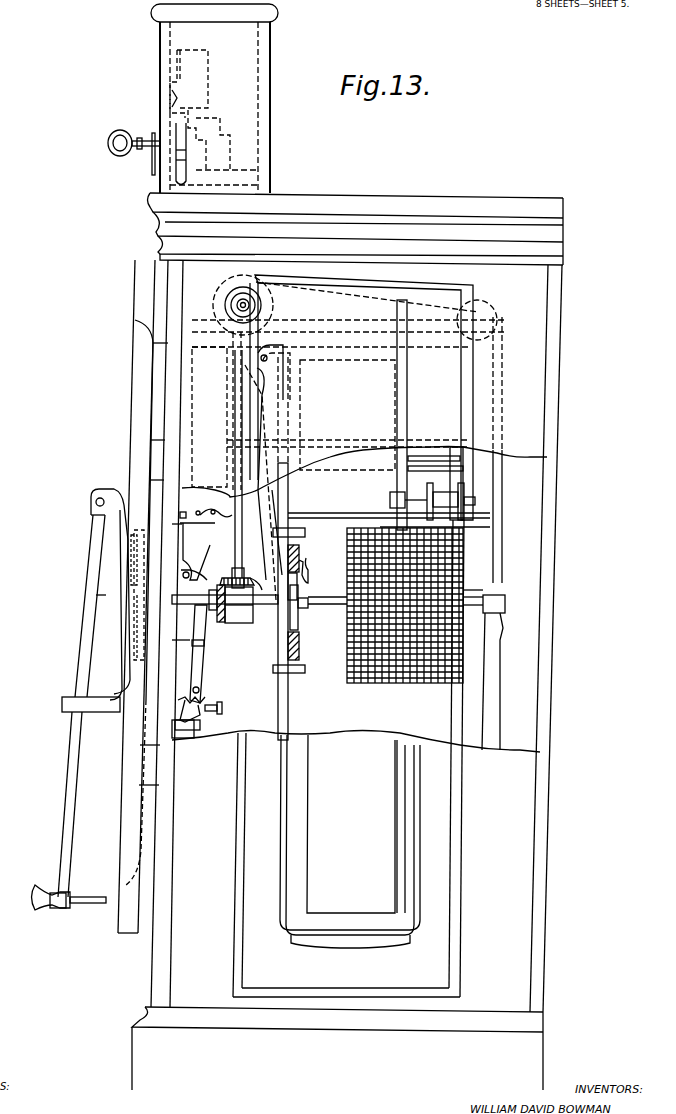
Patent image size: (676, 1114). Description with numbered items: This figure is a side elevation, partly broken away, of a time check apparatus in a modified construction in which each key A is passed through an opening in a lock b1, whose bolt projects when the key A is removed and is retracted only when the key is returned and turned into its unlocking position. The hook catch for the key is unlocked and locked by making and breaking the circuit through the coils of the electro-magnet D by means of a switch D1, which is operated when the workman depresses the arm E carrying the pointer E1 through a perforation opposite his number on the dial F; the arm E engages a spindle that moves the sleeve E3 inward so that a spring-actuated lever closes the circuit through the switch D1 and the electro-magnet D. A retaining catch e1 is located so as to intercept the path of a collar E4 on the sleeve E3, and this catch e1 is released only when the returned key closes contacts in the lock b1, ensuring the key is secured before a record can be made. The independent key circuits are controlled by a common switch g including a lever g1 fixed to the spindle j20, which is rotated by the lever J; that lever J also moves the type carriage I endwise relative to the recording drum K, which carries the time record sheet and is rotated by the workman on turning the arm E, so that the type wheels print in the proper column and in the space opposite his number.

The key A is at (126, 158).
The lock b1 is at (172, 168).
The electro-magnet D is at (176, 105).
The switch D1 is at (215, 695).
The arm E is at (62, 806).
The pointer E1 is at (90, 912).
The sleeve E3 is at (240, 620).
The collar E4 is at (228, 580).
The retaining catch e1 is at (200, 567).
The dial F is at (123, 868).
The switch g is at (302, 643).
The lever g1 is at (308, 577).
The type carriage I is at (470, 435).
The lever J is at (134, 565).
The spindle j20 is at (264, 600).
The recording drum K is at (405, 616).